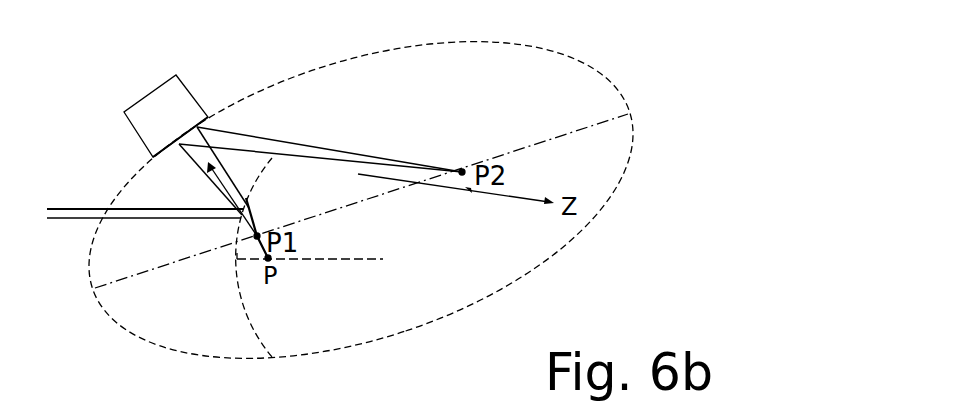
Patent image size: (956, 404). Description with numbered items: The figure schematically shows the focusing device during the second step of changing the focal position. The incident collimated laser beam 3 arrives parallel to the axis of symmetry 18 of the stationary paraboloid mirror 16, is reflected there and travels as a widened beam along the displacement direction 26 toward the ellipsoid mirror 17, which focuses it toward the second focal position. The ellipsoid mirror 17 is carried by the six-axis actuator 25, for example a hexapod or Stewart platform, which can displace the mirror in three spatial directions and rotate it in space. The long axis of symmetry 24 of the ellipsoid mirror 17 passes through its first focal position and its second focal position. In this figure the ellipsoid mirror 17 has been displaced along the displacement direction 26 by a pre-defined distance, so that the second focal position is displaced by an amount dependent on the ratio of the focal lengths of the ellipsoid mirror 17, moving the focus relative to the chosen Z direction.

The laser beam 3 is at (67, 208).
The paraboloid mirror 16 is at (238, 223).
The ellipsoid mirror 17 is at (164, 153).
The axis of symmetry 18 is at (345, 261).
The axis of symmetry 24 is at (597, 125).
The 6-axis actuator 25 is at (175, 103).
The displacement direction 26 is at (213, 191).